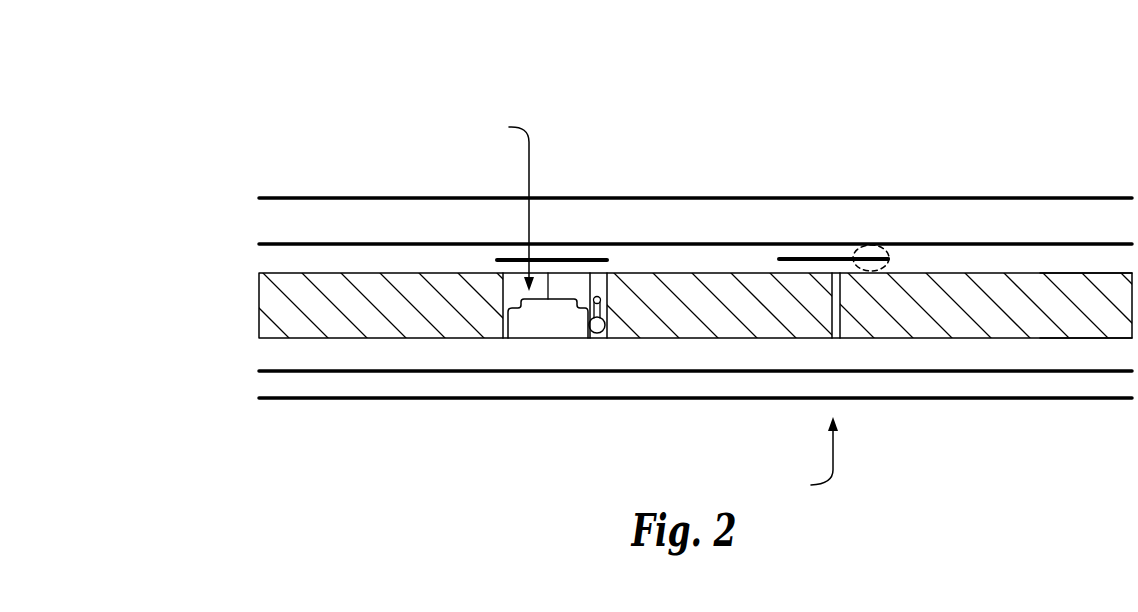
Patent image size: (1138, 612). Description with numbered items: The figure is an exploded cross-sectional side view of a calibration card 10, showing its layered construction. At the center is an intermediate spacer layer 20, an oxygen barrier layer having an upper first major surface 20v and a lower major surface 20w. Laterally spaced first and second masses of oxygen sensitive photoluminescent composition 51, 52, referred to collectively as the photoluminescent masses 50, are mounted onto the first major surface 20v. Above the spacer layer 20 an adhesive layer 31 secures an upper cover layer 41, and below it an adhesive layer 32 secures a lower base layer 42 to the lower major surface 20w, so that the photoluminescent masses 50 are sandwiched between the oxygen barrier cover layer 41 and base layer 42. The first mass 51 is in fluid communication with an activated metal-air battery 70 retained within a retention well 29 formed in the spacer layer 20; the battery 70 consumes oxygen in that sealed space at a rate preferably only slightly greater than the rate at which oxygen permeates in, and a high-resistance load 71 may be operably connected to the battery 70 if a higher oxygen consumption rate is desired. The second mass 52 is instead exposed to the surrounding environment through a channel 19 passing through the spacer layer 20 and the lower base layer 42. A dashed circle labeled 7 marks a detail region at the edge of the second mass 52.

The calibration card 10 is at (338, 78).
The upper cover layer 41 is at (275, 197).
The adhesive layer 31 is at (265, 243).
The adhesive layer 32 is at (265, 372).
The lower base layer 42 is at (275, 399).
The intermediate spacer layer 20 is at (268, 301).
The first major surface of spacer layer 20v is at (1086, 273).
The lower major surface of spacer layer 20w is at (1088, 338).
The first mass of oxygen sensitive photoluminescent composition 51 is at (554, 259).
The second mass of oxygen sensitive photoluminescent composition 52 is at (828, 258).
The retention well 29 is at (511, 202).
The channel 19 is at (813, 457).
The activated metal-air battery 70 is at (567, 327).
The load 71 is at (598, 333).
The detail region 7 is at (884, 249).
The photoluminescent masses 50 is at (1034, 606).